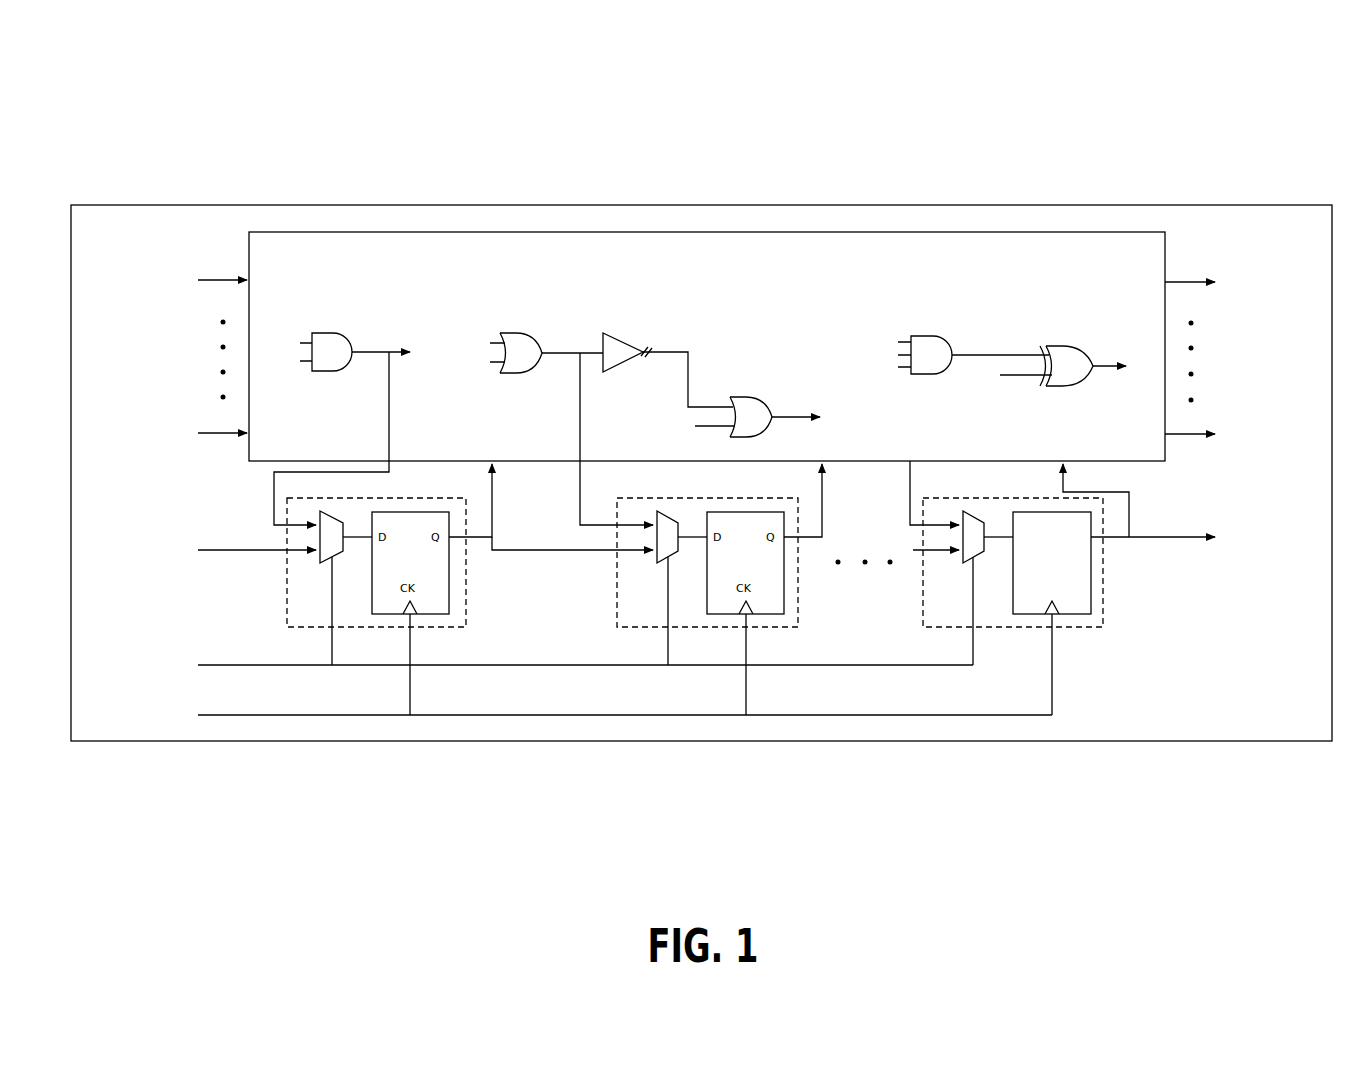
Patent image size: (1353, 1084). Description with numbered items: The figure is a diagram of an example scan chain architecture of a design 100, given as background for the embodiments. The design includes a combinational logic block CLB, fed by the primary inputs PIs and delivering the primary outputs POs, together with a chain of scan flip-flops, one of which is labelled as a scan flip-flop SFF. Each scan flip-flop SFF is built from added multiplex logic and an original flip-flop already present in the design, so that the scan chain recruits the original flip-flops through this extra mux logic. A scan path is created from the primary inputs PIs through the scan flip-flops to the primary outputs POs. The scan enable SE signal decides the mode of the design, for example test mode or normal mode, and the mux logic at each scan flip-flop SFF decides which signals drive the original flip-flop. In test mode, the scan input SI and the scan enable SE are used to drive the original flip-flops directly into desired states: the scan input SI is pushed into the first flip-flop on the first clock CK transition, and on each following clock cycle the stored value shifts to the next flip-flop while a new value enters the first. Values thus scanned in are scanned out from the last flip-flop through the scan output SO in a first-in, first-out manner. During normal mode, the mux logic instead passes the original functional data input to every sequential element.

The integrated circuit with scan chain 100 is at (1238, 98).
The combinational logic block CLB is at (707, 346).
The primary inputs PIs is at (171, 356).
The primary outputs POs is at (1233, 358).
The scan input SI is at (205, 563).
The scan output SO is at (1198, 538).
The scan enable SE is at (533, 666).
The clock CK is at (575, 715).
The scan flip-flop SFF is at (1058, 634).